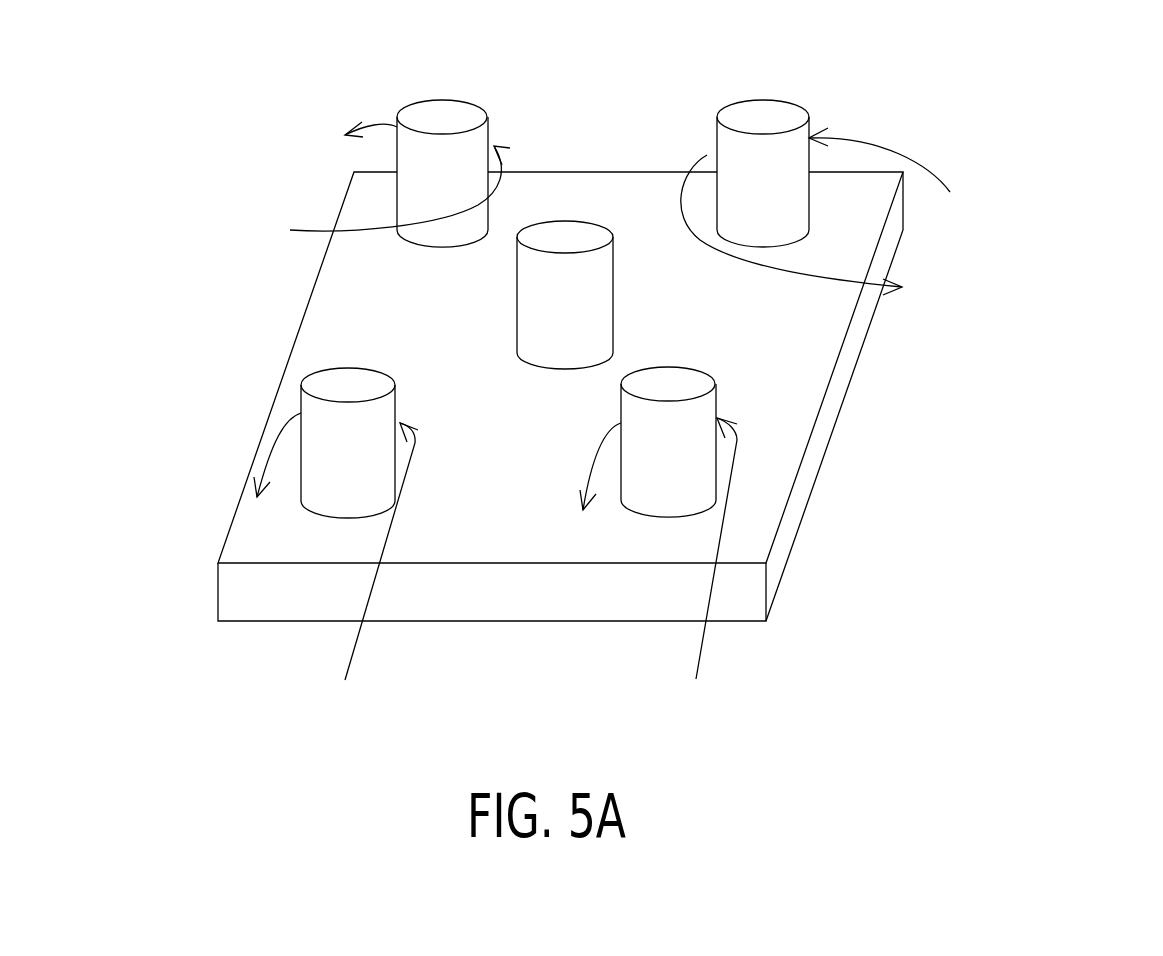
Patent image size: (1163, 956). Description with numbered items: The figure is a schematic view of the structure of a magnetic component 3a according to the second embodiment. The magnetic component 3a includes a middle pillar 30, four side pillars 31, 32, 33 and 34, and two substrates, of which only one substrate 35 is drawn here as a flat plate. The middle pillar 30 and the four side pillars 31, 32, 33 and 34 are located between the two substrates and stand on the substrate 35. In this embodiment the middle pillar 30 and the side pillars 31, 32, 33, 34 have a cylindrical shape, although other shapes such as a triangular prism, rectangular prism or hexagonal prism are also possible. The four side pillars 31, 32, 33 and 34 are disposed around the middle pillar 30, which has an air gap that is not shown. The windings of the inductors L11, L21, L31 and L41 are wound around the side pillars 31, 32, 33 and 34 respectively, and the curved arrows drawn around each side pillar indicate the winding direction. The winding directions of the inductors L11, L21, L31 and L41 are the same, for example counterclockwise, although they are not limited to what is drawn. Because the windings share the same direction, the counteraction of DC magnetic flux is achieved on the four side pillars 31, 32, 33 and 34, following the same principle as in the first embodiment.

The magnetic component 3a is at (1144, 72).
The middle pillar 30 is at (565, 235).
The side pillar 31 is at (443, 117).
The side pillar 32 is at (332, 388).
The side pillar 33 is at (700, 382).
The side pillar 34 is at (778, 112).
The substrate 35 is at (782, 543).
The inductor L11 is at (374, 183).
The inductor L21 is at (336, 567).
The inductor L31 is at (658, 568).
The inductor L41 is at (833, 211).